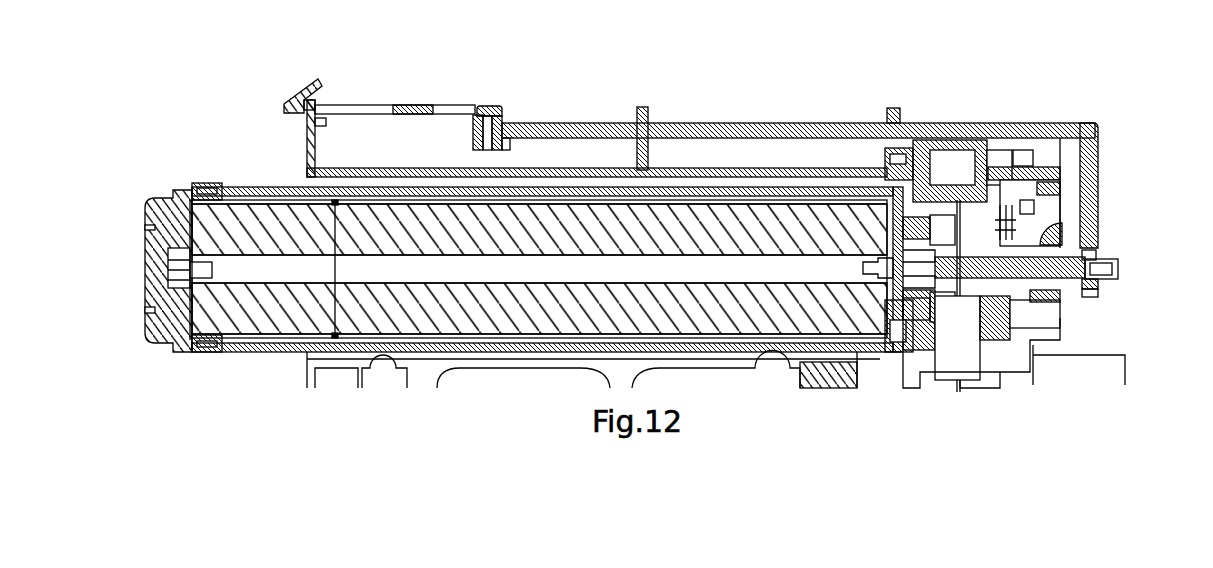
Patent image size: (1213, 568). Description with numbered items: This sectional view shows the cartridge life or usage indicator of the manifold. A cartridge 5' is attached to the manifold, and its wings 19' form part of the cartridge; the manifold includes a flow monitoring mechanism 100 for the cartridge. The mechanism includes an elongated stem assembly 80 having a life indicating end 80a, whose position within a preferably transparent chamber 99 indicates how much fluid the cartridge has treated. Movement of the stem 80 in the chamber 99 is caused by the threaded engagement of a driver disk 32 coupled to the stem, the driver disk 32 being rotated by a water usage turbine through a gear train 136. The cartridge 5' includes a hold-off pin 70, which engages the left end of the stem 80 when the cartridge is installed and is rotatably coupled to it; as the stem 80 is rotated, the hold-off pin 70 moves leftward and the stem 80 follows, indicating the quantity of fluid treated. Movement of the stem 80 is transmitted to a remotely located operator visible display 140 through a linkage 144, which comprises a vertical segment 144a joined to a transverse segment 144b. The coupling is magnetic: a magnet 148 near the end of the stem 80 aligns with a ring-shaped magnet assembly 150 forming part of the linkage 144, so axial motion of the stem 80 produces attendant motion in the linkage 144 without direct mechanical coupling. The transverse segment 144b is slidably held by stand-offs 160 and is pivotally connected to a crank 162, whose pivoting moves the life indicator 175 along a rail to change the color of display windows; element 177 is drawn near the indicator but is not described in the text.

The cartridge 5' is at (513, 219).
The operator visible display 140 is at (337, 86).
The life indicator 175 is at (290, 103).
The post 177 is at (298, 118).
The crank 162 is at (479, 107).
The stand-offs 160 is at (649, 108).
The transverse segment 144b is at (762, 123).
The wings 19' is at (899, 250).
The linkage 144 is at (972, 106).
The flow monitoring mechanism 100 is at (1031, 164).
The gear train 136 is at (1029, 199).
The vertical segment 144a is at (1097, 178).
The elongated stem assembly 80 is at (1080, 232).
The magnet 148 is at (1095, 265).
The life indicating end 80a is at (1120, 268).
The chamber 99 is at (1102, 283).
The ring-shaped magnet assembly 150 is at (1086, 296).
The driver disk 32 is at (1062, 308).
The hold-off pin 70 is at (880, 362).